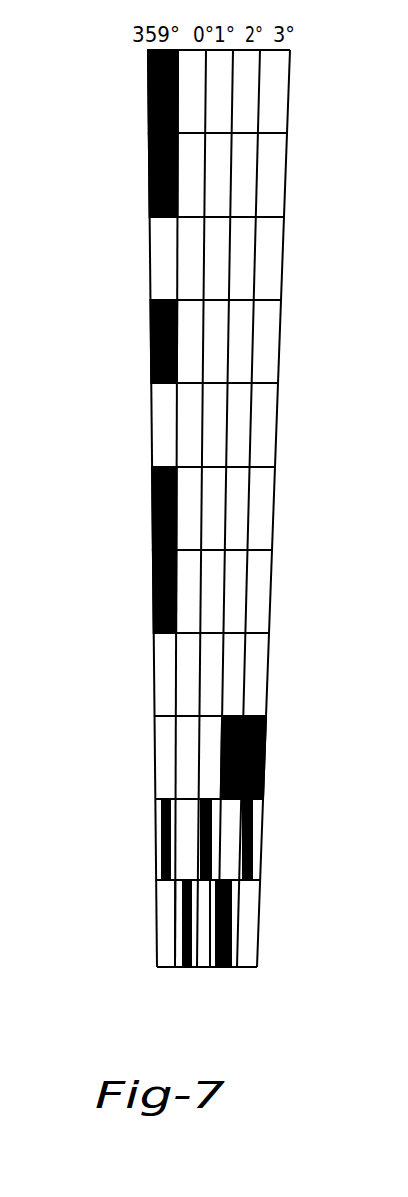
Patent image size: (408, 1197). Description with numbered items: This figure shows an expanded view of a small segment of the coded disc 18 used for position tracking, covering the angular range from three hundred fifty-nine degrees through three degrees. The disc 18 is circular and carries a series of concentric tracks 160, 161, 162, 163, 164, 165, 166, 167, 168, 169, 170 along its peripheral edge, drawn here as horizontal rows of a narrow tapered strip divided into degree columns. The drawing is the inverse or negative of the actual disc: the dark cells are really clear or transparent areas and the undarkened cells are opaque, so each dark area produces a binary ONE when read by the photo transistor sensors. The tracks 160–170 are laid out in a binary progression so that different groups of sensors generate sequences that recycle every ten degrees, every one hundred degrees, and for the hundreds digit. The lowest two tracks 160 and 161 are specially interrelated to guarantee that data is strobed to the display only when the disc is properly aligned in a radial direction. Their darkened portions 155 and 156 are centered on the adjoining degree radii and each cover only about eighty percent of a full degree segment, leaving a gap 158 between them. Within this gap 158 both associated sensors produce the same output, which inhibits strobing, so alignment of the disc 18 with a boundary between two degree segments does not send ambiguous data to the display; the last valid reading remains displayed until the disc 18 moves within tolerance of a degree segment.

The coded disc 18 is at (320, 191).
The darkened portion 155 is at (180, 977).
The darkened portion 156 is at (152, 849).
The gap 158 is at (170, 882).
The track 160 is at (156, 923).
The track 161 is at (156, 827).
The track 162 is at (155, 750).
The track 163 is at (154, 671).
The track 164 is at (153, 589).
The track 165 is at (152, 509).
The track 166 is at (152, 427).
The track 167 is at (151, 341).
The track 168 is at (150, 257).
The track 169 is at (149, 177).
The track 170 is at (148, 90).